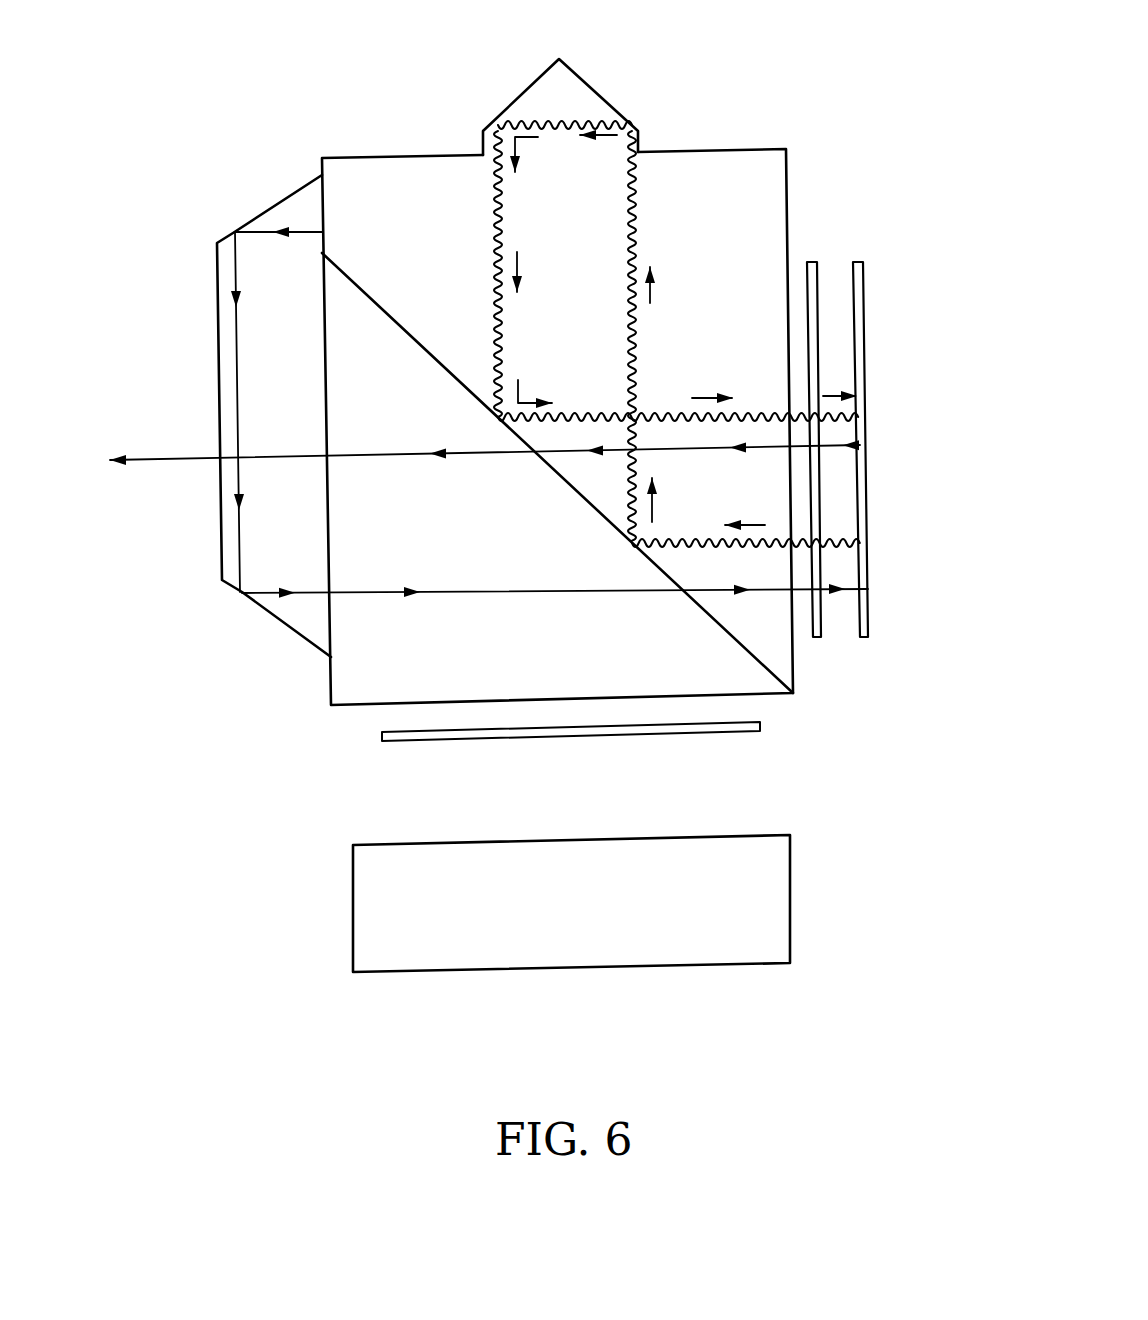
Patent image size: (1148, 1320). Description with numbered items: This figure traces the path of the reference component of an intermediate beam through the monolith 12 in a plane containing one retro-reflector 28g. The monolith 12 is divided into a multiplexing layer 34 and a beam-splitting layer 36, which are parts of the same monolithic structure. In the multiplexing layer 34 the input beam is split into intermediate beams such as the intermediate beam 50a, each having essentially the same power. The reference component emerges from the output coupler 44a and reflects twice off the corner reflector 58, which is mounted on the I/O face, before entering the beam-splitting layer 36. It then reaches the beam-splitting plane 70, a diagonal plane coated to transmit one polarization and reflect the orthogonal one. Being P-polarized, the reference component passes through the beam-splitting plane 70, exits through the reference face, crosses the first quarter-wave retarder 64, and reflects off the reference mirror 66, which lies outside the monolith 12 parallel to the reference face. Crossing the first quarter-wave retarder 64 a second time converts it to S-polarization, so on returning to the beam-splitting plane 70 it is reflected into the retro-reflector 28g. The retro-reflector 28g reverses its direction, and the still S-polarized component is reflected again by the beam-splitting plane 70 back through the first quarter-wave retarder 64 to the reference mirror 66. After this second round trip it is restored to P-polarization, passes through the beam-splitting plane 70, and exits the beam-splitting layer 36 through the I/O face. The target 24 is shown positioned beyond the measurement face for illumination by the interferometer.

The monolith 12 is at (803, 99).
The target 24 is at (583, 913).
The retro-reflector 28g is at (597, 92).
The multiplexing layer 34 is at (732, 217).
The beam-splitting layer 36 is at (473, 543).
The output coupler 44a is at (322, 230).
The intermediate beam 50a is at (240, 283).
The corner reflector 58 is at (217, 342).
The first quarter-wave retarder 64 is at (815, 265).
The reference mirror 66 is at (865, 303).
The beam-splitting plane 70 is at (720, 628).